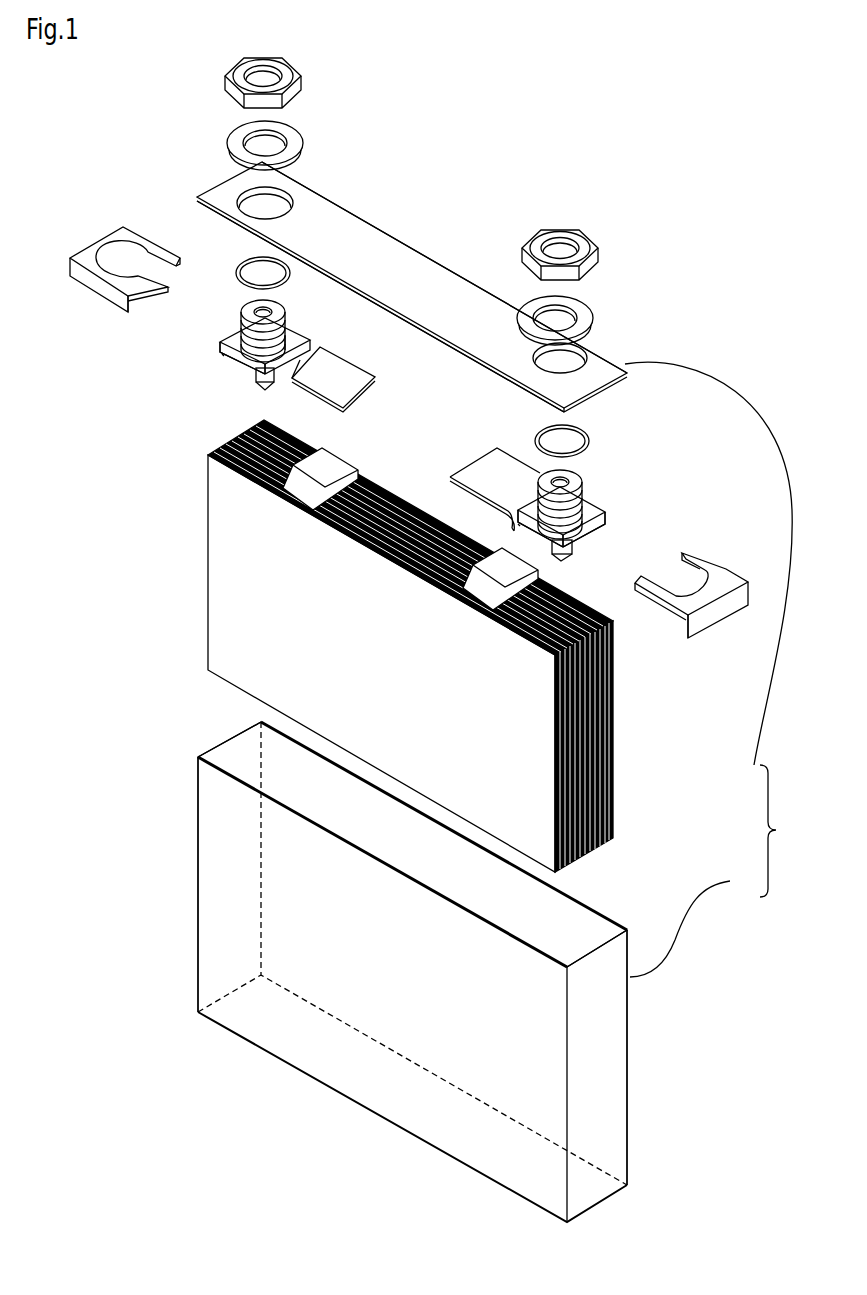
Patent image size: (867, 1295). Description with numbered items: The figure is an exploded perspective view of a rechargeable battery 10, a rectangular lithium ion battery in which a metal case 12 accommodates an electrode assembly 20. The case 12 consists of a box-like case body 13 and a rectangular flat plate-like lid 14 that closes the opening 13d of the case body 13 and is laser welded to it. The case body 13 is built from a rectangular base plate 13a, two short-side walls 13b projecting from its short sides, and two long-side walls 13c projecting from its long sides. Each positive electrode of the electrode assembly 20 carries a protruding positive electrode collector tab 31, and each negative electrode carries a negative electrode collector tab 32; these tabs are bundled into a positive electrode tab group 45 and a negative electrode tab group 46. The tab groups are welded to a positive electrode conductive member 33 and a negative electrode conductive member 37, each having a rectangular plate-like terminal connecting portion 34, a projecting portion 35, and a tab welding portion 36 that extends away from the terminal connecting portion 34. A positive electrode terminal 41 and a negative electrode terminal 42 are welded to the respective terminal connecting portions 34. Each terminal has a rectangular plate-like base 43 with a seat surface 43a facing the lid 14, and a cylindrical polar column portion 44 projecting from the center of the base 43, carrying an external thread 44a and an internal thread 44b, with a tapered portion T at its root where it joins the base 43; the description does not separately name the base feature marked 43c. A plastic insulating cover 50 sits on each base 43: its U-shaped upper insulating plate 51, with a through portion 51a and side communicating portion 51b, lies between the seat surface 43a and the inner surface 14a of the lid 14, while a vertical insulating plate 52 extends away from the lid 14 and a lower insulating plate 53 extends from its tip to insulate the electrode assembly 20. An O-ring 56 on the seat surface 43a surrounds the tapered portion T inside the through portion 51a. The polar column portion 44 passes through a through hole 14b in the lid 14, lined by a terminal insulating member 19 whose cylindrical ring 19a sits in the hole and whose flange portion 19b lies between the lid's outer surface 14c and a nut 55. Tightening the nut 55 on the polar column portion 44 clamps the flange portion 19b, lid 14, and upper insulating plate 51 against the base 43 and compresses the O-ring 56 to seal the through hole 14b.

The rechargeable battery 10 is at (629, 133).
The case 12 is at (782, 831).
The case body 13 is at (445, 956).
The base plate 13a is at (415, 1135).
The short-side wall 13b is at (222, 745).
The long-side wall 13c is at (213, 772).
The opening 13d is at (408, 876).
The lid 14 is at (494, 480).
The inner surface 14a is at (461, 349).
The through hole 14b is at (275, 208).
The outer surface 14c is at (382, 231).
The terminal insulating member 19 is at (421, 223).
The cylindrical ring 19a is at (238, 141).
The flange portion 19b is at (296, 126).
The electrode assembly 20 is at (449, 646).
The positive electrode collector tab 31 is at (493, 610).
The negative electrode collector tab 32 is at (290, 497).
The positive electrode conductive member 33 is at (416, 429).
The terminal connecting portion 34 is at (262, 384).
The projecting portion 35 is at (322, 352).
The tab welding portion 36 is at (372, 382).
The negative electrode conductive member 37 is at (372, 375).
The positive electrode terminal 41 is at (421, 435).
The negative electrode terminal 42 is at (300, 332).
The base 43 is at (408, 455).
The seat surface 43a is at (222, 343).
The base side surface 43c is at (598, 536).
The polar column portion 44 is at (419, 433).
The external thread 44a is at (282, 382).
The internal thread 44b is at (258, 310).
The positive electrode tab group 45 is at (453, 600).
The negative electrode tab group 46 is at (307, 516).
The insulating cover 50 is at (395, 438).
The upper insulating plate 51 is at (420, 427).
The through portion 51a is at (147, 238).
The communicating portion 51b is at (135, 298).
The vertical insulating plate 52 is at (70, 266).
The lower insulating plate 53 is at (134, 300).
The nut 55 is at (299, 74).
The O-ring 56 is at (258, 264).
The tapered portion T is at (220, 356).